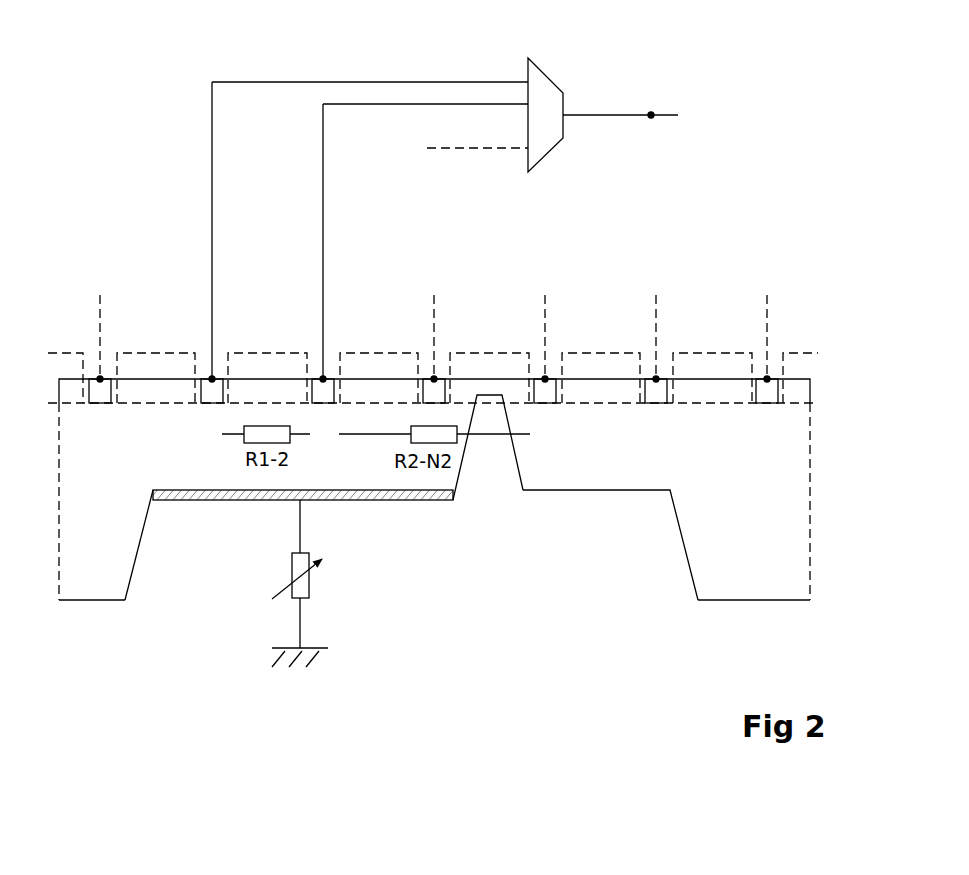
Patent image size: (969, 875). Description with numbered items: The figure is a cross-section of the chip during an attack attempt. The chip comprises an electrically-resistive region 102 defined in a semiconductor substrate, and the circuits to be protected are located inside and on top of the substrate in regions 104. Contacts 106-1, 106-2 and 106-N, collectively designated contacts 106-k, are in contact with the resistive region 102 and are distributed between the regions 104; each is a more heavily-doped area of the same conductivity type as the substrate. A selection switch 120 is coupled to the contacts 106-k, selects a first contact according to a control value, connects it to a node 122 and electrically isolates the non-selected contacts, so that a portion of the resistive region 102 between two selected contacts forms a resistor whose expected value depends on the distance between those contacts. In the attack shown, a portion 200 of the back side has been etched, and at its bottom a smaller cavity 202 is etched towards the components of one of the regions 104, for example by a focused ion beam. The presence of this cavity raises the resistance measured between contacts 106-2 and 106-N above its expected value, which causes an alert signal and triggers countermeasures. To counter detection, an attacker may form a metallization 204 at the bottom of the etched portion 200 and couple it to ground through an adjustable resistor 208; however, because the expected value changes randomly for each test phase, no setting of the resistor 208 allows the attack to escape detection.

The electrically-resistive region 102 is at (80, 531).
The regions 104 is at (60, 352).
The contact 106-1 is at (216, 368).
The contact 106-2 is at (328, 368).
The contact 106-N is at (550, 368).
The contacts 106-k is at (661, 368).
The selection switch 120 is at (547, 73).
The node 122 is at (651, 115).
The etched portion 200 is at (136, 571).
The cavity 202 is at (487, 473).
The metallization 204 is at (380, 499).
The resistor 208 is at (310, 587).